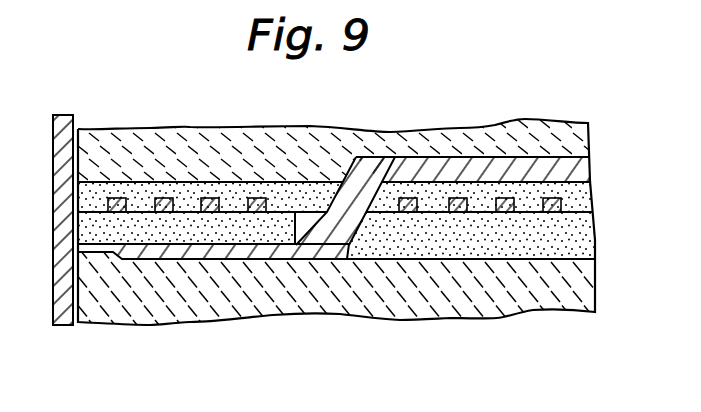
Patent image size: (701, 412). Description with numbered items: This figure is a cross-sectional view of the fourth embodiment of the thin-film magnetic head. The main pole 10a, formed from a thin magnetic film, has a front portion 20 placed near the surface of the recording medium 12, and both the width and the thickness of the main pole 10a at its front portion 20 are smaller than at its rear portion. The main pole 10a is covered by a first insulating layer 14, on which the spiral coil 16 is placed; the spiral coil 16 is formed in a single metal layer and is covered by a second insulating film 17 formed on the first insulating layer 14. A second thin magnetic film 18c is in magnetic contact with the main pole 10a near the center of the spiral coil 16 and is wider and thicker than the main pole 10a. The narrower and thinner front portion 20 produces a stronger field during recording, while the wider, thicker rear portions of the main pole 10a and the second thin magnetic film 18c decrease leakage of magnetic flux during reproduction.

The main pole 10a is at (175, 256).
The recording medium 12 is at (57, 328).
The first insulating layer 14 is at (275, 240).
The spiral coil 16 is at (562, 202).
The second insulating film 17 is at (190, 190).
The second thin magnetic film 18c is at (586, 170).
The front portion 20 is at (102, 250).